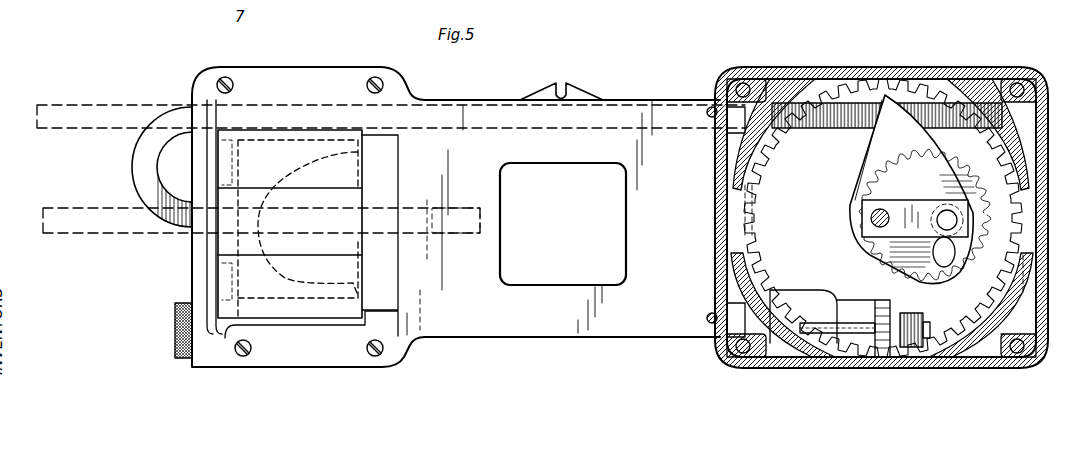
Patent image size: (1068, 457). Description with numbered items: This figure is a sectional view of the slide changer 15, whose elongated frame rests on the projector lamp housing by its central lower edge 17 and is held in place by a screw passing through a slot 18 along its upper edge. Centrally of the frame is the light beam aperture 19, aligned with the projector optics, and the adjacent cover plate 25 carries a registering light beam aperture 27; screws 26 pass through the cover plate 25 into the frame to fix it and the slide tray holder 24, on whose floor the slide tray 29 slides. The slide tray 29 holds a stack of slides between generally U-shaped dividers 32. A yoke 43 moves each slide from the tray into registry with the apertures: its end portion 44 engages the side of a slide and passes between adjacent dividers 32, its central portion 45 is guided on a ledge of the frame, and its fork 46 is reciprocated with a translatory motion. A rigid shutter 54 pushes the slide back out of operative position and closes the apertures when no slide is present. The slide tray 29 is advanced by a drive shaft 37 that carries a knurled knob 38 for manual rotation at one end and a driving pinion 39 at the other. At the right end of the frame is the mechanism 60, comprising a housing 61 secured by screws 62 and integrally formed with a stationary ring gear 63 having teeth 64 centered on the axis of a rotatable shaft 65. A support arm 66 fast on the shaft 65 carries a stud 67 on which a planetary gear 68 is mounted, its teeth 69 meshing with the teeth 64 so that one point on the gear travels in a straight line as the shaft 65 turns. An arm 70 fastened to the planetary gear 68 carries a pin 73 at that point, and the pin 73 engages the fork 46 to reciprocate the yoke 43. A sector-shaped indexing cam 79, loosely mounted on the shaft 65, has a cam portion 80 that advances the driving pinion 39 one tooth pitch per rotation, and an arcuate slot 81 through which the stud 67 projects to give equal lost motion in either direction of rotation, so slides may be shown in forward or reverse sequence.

The slide changer 15 is at (176, 65).
The central lower edge 17 is at (573, 337).
The slot 18 is at (565, 84).
The light beam aperture 19 is at (573, 253).
The slide tray holder 24 is at (290, 318).
The cover plate 25 is at (458, 283).
The screws 26 is at (362, 85).
The light beam aperture 27 is at (626, 258).
The slide tray 29 is at (274, 168).
The dividers 32 is at (298, 280).
The drive shaft 37 is at (790, 358).
The knurled knob 38 is at (174, 345).
The driving pinion 39 is at (878, 358).
The yoke 43 is at (131, 169).
The end portion 44 is at (463, 208).
The central portion 45 is at (806, 100).
The fork 46 is at (755, 192).
The shutter 54 is at (838, 186).
The mechanism 60 is at (962, 62).
The housing 61 is at (920, 82).
The screws 62 is at (740, 83).
The stationary ring gear 63 is at (975, 98).
The teeth 64 is at (885, 80).
The rotatable shaft 65 is at (870, 220).
The support arm 66 is at (878, 240).
The stud 67 is at (947, 220).
The planetary gear 68 is at (962, 198).
The teeth 69 is at (1015, 165).
The arm 70 is at (1005, 240).
The pin 73 is at (752, 225).
The indexing cam 79 is at (892, 170).
The cam portion 80 is at (870, 133).
The arcuate slot 81 is at (936, 262).